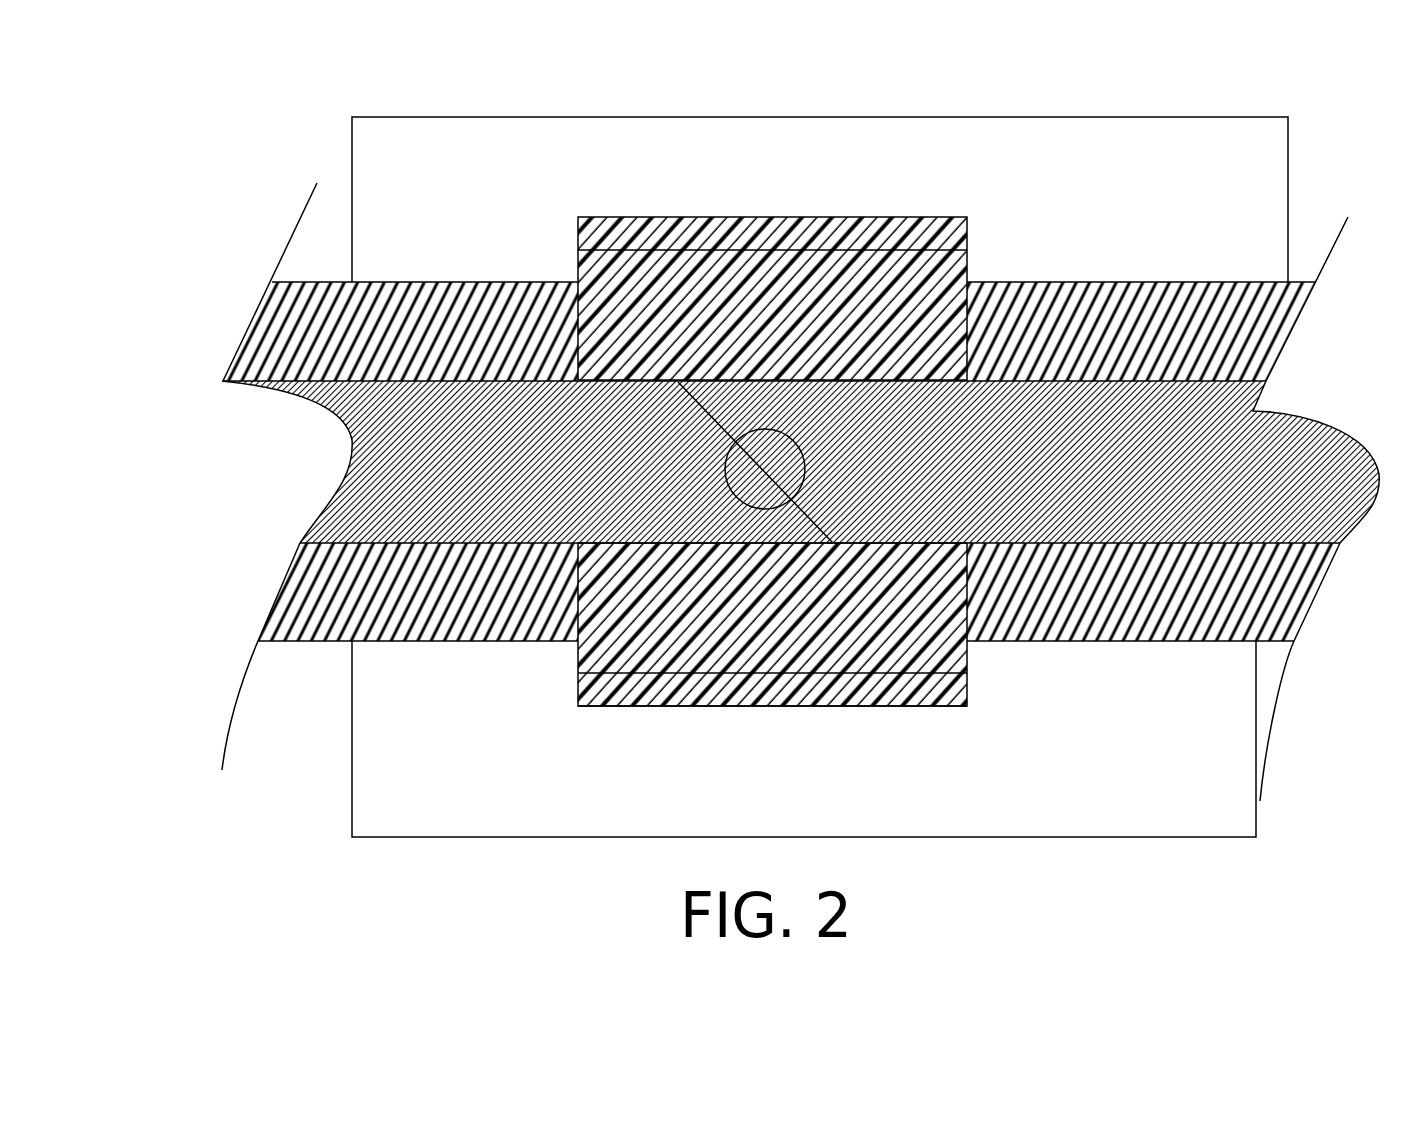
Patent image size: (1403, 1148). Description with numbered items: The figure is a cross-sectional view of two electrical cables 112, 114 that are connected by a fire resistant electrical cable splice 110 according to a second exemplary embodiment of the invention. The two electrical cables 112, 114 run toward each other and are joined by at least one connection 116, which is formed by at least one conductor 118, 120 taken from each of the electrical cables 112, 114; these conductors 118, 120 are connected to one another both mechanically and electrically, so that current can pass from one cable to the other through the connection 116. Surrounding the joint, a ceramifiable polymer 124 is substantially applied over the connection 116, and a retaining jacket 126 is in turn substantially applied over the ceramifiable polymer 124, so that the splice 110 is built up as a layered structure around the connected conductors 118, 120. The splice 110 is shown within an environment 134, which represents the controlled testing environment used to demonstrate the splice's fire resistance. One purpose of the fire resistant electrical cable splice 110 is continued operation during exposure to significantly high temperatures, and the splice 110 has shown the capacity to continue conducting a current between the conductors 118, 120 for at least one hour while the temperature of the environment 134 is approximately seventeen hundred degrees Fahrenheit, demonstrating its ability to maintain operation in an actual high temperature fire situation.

The fire resistant electrical cable splice 110 is at (772, 467).
The electrical cable 112 is at (420, 280).
The electrical cable 114 is at (1065, 280).
The connection 116 is at (810, 462).
The conductor 118 is at (477, 545).
The conductor 120 is at (1156, 545).
The ceramifiable polymer 124 is at (740, 677).
The retaining jacket 126 is at (872, 715).
The environment 134 is at (1100, 117).